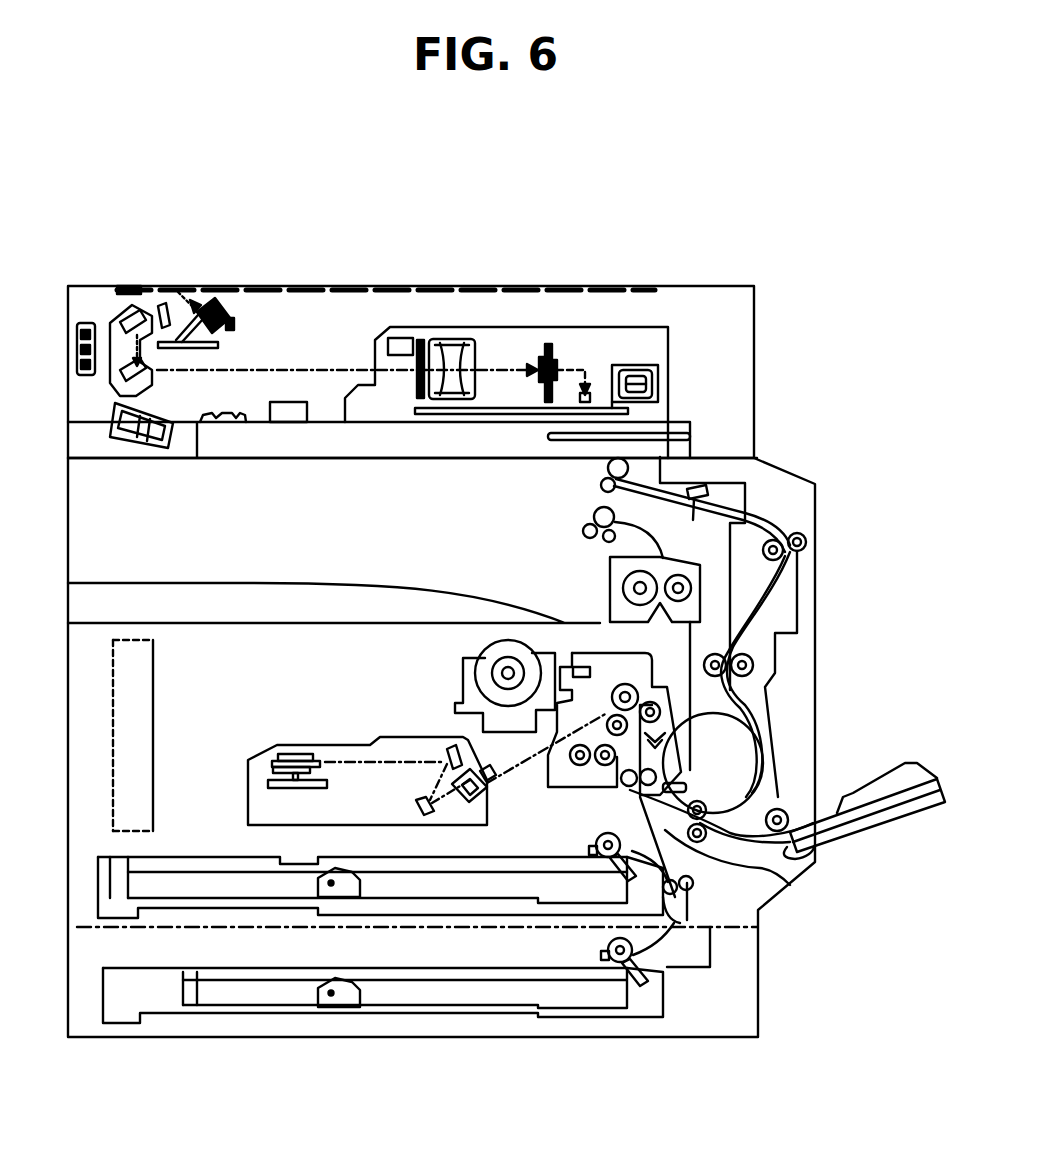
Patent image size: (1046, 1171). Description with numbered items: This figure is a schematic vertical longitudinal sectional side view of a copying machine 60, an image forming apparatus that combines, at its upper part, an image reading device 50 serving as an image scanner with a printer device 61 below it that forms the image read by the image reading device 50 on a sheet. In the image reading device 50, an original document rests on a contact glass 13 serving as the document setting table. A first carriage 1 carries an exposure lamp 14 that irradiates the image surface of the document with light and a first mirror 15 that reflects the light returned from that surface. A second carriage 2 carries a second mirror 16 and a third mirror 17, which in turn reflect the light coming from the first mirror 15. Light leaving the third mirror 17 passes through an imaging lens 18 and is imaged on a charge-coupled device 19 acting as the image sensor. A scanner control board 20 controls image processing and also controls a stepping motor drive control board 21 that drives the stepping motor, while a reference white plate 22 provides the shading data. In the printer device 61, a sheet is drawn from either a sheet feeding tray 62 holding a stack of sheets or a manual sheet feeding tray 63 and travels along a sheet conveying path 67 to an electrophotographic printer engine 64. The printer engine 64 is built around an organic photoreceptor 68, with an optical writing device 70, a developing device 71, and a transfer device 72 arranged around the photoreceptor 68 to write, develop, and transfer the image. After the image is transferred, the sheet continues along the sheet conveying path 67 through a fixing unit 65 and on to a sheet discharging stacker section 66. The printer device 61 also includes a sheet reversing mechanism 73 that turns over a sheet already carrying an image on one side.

The first carriage 1 is at (196, 350).
The second carriage 2 is at (122, 322).
The contact glass 13 is at (618, 283).
The exposure lamp 14 is at (203, 290).
The first mirror 15 is at (200, 348).
The second mirror 16 is at (136, 305).
The third mirror 17 is at (156, 375).
The imaging lens 18 is at (450, 337).
The charge-coupled device 19 is at (550, 340).
The scanner control board 20 is at (528, 414).
The stepping motor drive control board 21 is at (590, 441).
The reference white plate 22 is at (150, 289).
The image reading device 50 is at (772, 362).
The copying machine 60 is at (738, 258).
The printer device 61 is at (832, 712).
The sheet feeding tray 62 is at (165, 910).
The manual sheet feeding tray 63 is at (933, 817).
The electrophotographic printer engine 64 is at (448, 688).
The fixing unit 65 is at (808, 538).
The sheet discharging stacker section 66 is at (438, 587).
The sheet conveying path 67 is at (757, 878).
The organic photoreceptor 68 is at (610, 672).
The optical writing device 70 is at (307, 745).
The developing device 71 is at (588, 768).
The transfer device 72 is at (692, 728).
The sheet reversing mechanism 73 is at (778, 614).